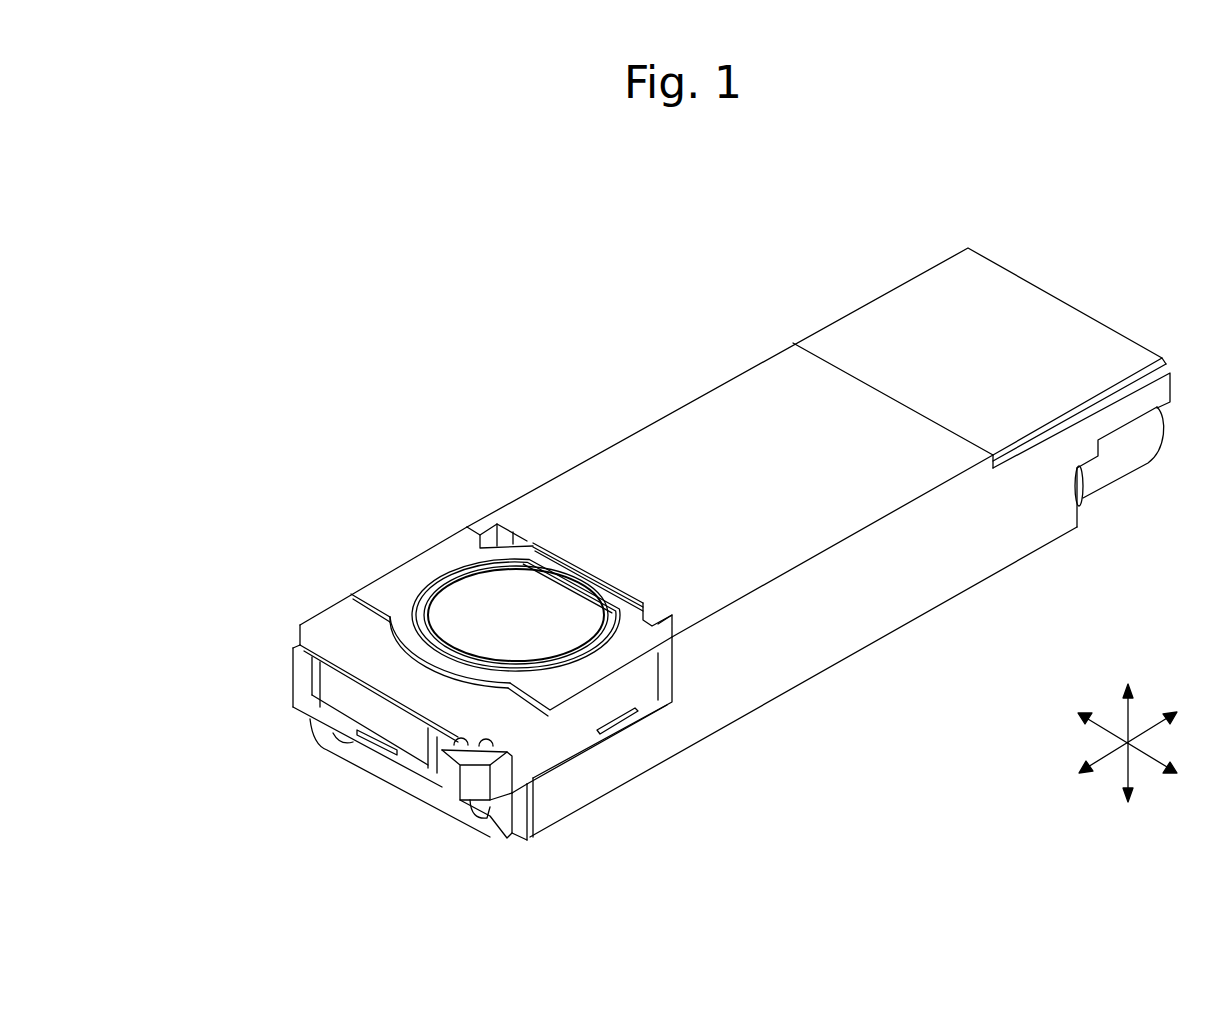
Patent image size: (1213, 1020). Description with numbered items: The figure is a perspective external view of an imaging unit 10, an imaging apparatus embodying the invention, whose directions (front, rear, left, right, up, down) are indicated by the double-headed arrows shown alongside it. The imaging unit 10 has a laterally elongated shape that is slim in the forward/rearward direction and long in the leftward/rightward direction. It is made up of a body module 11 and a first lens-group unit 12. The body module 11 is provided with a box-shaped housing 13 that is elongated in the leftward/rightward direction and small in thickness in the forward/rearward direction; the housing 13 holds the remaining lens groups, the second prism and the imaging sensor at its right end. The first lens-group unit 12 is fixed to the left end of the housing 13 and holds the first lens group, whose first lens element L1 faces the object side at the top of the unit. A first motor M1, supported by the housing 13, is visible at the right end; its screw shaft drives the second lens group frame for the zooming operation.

The imaging unit 10 is at (466, 396).
The body module 11 is at (723, 374).
The first lens-group unit 12 is at (297, 607).
The housing 13 is at (860, 622).
The first motor M1 is at (1132, 452).
The first lens element L1 is at (493, 590).